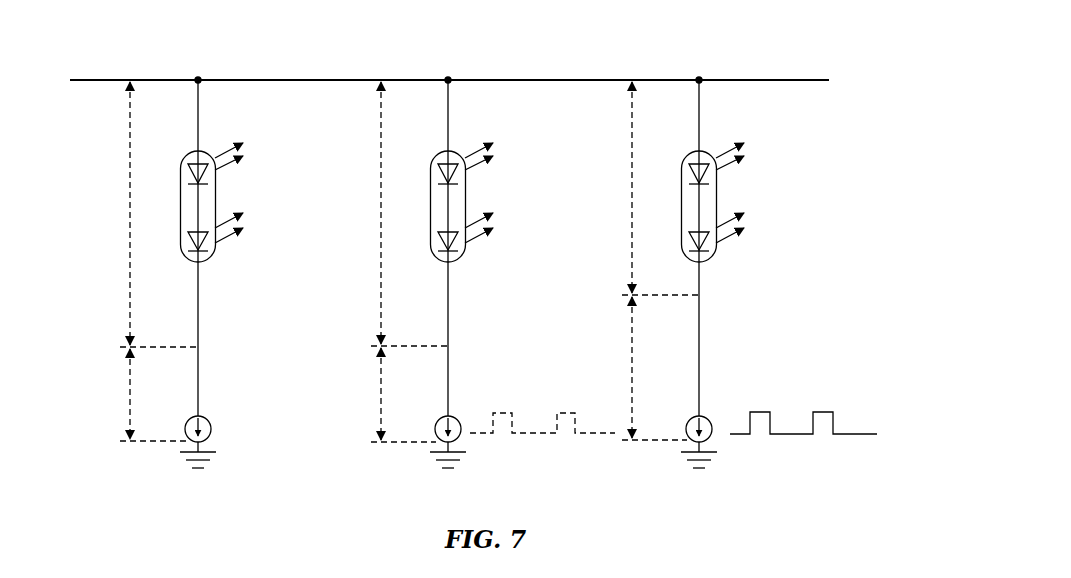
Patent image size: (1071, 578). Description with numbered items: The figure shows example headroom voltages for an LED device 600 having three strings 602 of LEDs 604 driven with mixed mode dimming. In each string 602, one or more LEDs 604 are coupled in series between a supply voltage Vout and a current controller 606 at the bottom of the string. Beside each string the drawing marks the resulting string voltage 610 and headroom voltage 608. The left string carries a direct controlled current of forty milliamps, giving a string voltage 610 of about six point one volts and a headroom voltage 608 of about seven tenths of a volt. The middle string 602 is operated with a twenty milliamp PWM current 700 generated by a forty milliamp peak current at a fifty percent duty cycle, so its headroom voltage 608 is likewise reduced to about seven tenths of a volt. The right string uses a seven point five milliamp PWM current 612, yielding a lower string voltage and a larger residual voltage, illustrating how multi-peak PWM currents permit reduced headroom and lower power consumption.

The LED device 600 is at (103, 22).
The string 602 is at (198, 119).
The LED 604 is at (203, 172).
The current controller 606 is at (212, 432).
The headroom voltage 608 is at (96, 401).
The string voltage 610 is at (96, 272).
The PWM current 612 is at (858, 417).
The PWM current 700 is at (527, 449).